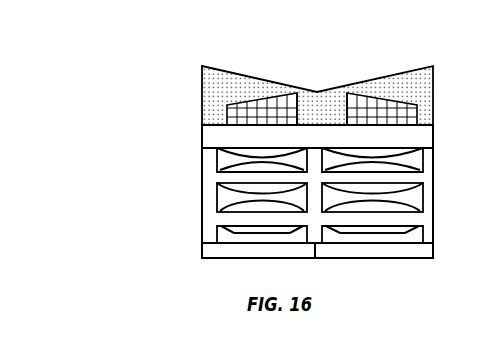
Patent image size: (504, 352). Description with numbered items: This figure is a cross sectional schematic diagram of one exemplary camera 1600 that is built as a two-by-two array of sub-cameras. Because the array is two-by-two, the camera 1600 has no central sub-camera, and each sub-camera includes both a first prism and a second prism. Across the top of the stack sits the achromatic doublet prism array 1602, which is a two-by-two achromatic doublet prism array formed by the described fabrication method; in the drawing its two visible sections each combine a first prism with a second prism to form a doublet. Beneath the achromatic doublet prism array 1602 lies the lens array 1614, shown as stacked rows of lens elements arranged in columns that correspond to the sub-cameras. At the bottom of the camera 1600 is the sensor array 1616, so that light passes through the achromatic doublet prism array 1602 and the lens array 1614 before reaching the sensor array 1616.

The camera 1600 is at (229, 142).
The achromatic doublet prism array 1602 is at (254, 142).
The lens array 1614 is at (207, 177).
The sensor array 1616 is at (207, 249).